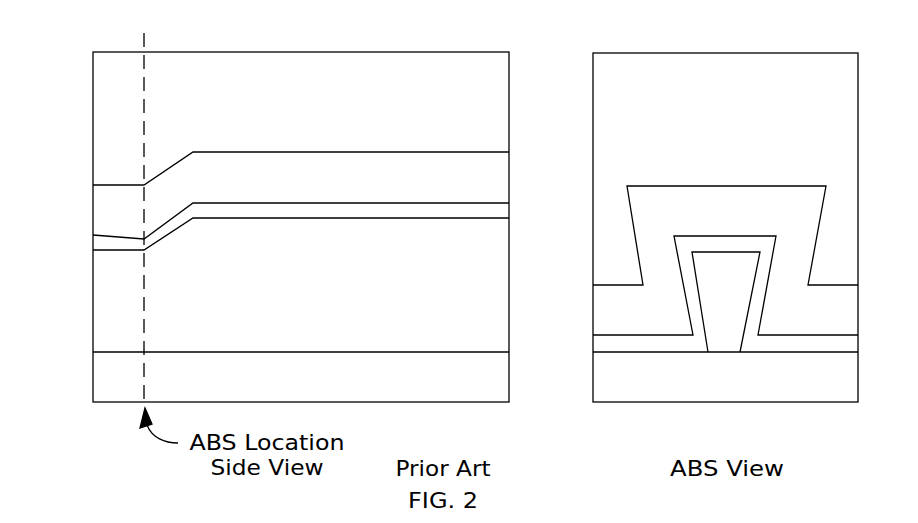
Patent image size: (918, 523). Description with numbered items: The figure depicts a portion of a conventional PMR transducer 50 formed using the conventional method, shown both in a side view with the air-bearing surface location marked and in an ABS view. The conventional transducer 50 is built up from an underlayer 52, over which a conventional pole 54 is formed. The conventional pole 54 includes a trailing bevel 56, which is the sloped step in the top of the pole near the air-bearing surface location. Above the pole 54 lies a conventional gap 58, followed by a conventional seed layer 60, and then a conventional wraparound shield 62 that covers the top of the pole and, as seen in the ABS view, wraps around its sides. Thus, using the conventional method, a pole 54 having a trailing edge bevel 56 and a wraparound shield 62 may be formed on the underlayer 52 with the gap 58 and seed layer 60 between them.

The conventional PMR transducer 50 is at (428, 30).
The underlayer 52 is at (593, 385).
The conventional pole 54 is at (697, 305).
The trailing bevel 56 is at (160, 205).
The conventional gap 58 is at (93, 243).
The conventional seed layer 60 is at (93, 229).
The conventional wraparound shield 62 is at (592, 128).